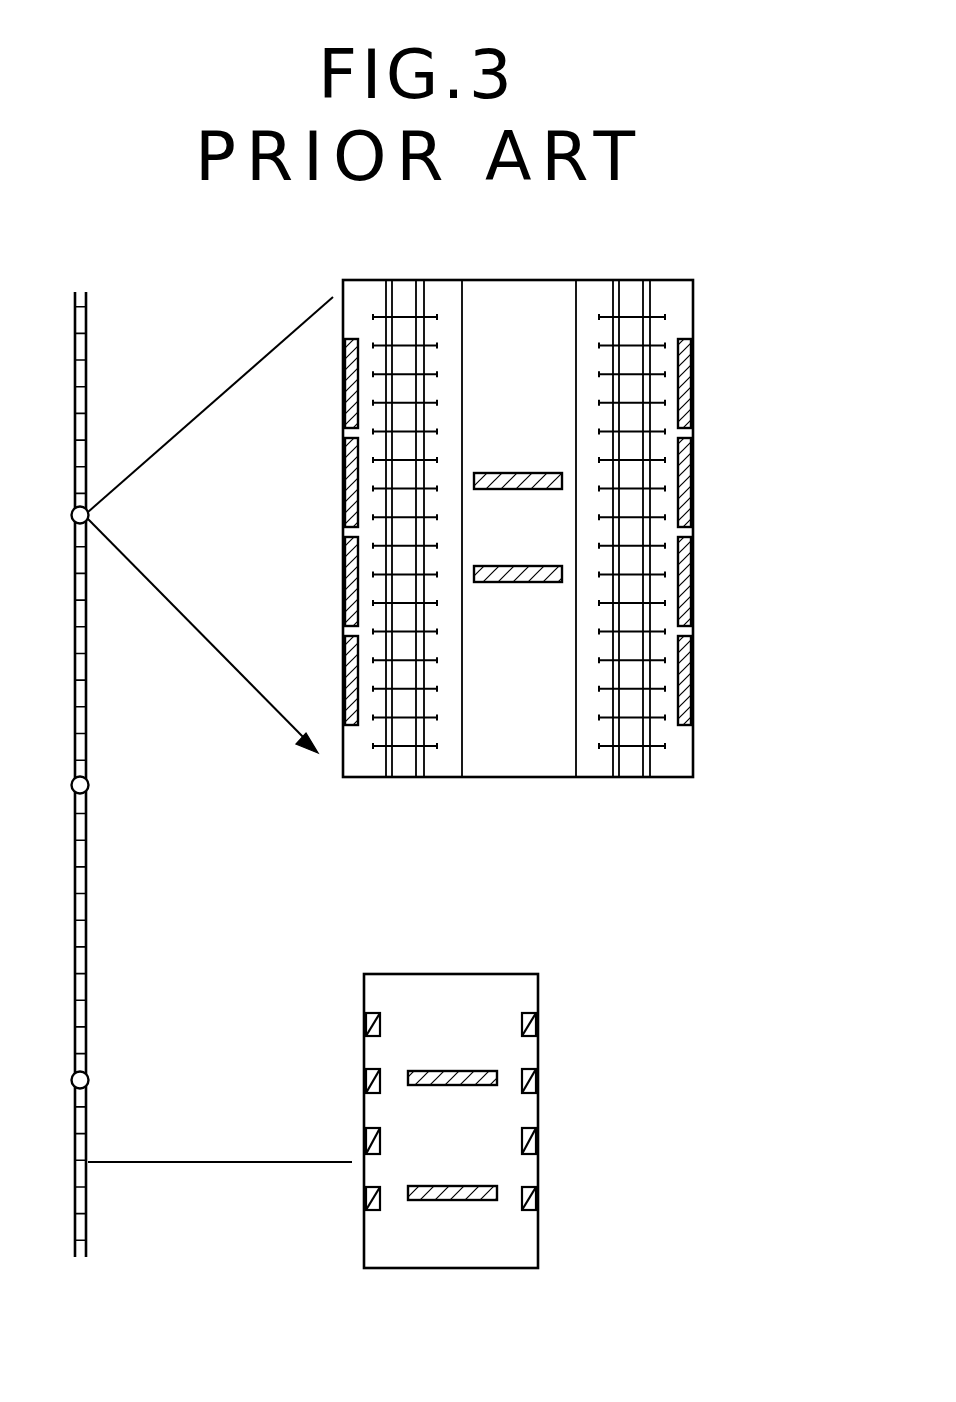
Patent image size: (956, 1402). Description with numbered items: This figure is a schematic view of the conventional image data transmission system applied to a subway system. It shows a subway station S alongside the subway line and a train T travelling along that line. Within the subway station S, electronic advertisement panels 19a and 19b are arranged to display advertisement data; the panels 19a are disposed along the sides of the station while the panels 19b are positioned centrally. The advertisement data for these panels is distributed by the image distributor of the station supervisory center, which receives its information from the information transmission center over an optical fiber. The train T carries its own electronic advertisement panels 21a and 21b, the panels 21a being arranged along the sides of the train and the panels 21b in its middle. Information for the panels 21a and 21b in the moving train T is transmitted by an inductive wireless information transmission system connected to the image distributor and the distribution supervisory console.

The electronic advertisement panel 19a is at (345, 407).
The electronic advertisement panel 19b is at (527, 473).
The electronic advertisement panel 21a is at (366, 1022).
The electronic advertisement panel 21b is at (457, 1071).
The subway station S is at (312, 525).
The train T is at (310, 1107).